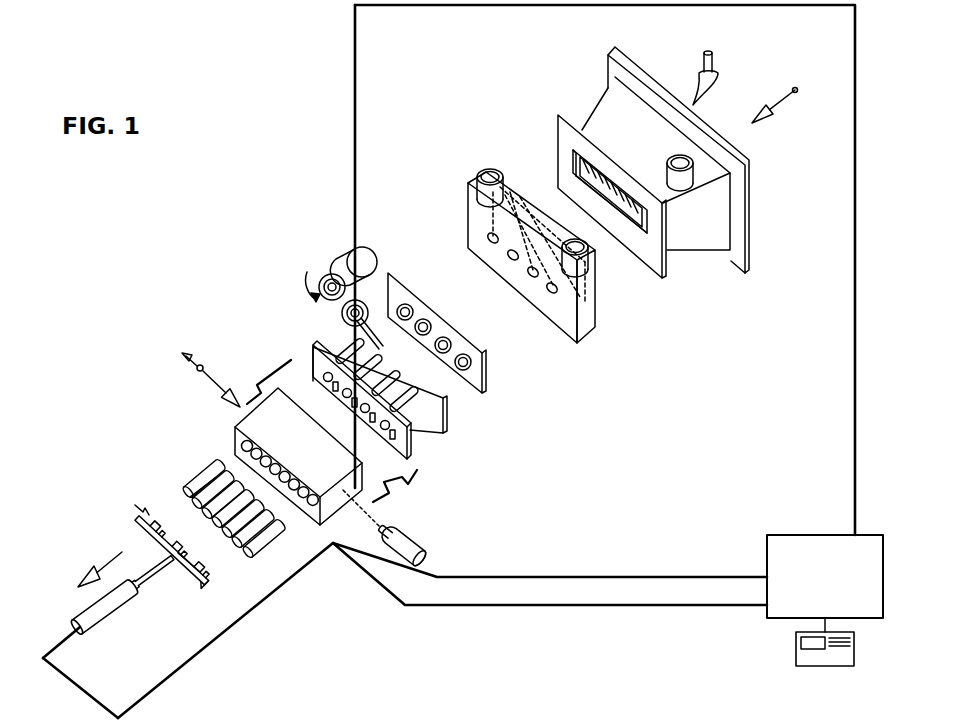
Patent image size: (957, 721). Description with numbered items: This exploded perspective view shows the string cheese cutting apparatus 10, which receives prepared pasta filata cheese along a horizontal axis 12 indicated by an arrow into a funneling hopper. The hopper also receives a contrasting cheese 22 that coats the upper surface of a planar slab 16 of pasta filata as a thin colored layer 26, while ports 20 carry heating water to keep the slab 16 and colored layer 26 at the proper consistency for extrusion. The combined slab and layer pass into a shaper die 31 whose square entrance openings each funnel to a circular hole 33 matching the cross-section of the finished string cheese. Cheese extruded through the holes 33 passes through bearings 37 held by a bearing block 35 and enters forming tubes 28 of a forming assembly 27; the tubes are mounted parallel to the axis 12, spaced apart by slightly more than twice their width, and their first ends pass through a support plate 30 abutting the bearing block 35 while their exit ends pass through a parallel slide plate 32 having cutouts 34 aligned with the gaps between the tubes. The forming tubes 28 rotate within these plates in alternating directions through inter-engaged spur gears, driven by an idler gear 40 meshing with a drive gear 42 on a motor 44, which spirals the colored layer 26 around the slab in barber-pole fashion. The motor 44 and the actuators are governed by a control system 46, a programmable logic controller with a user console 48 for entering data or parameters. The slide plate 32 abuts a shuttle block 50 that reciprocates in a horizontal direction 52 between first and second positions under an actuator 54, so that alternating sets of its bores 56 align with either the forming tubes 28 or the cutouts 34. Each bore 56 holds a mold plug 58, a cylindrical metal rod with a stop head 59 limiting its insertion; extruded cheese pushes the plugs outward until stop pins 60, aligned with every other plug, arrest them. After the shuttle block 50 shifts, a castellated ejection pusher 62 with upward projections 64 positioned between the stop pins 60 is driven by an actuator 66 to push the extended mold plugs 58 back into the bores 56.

The string cheese cutting apparatus 10 is at (287, 199).
The horizontal axis 12 is at (792, 96).
The planar slab 16 is at (648, 255).
The ports 20 is at (694, 172).
The contrasting cheese 22 is at (717, 65).
The colored layer 26 is at (573, 160).
The forming assembly 27 is at (428, 449).
The forming tubes 28 is at (348, 356).
The support plate 30 is at (446, 415).
The shaper die 31 is at (587, 333).
The slide plate 32 is at (317, 358).
The circular holes 33 is at (487, 240).
The cutouts 34 is at (386, 438).
The bearing block 35 is at (487, 378).
The bearings 37 is at (428, 325).
The idler gear 40 is at (343, 314).
The drive gear 42 is at (328, 276).
The motor 44 is at (347, 258).
The control system 46 is at (838, 590).
The user console 48 is at (806, 665).
The shuttle block 50 is at (237, 427).
The horizontal direction 52 is at (228, 362).
The actuator 54 is at (418, 545).
The bores 56 is at (240, 445).
The mold plugs 58 is at (218, 482).
The stop heads 59 is at (187, 500).
The stop pins 60 is at (138, 508).
The castellated ejection pusher 62 is at (140, 518).
The projections 64 is at (185, 567).
The actuator 66 is at (108, 622).